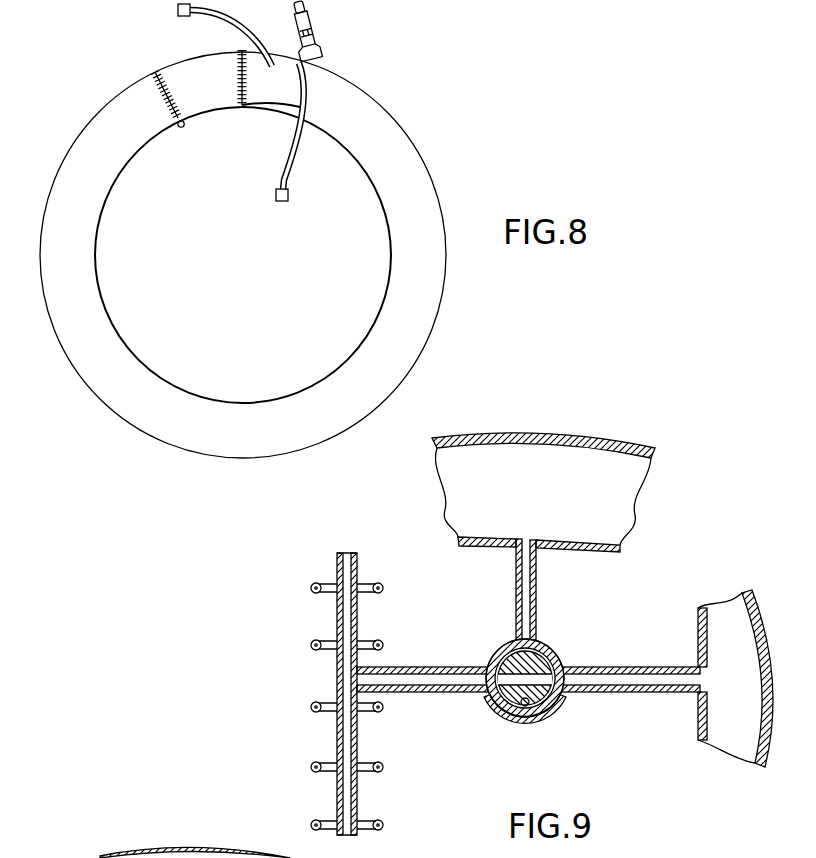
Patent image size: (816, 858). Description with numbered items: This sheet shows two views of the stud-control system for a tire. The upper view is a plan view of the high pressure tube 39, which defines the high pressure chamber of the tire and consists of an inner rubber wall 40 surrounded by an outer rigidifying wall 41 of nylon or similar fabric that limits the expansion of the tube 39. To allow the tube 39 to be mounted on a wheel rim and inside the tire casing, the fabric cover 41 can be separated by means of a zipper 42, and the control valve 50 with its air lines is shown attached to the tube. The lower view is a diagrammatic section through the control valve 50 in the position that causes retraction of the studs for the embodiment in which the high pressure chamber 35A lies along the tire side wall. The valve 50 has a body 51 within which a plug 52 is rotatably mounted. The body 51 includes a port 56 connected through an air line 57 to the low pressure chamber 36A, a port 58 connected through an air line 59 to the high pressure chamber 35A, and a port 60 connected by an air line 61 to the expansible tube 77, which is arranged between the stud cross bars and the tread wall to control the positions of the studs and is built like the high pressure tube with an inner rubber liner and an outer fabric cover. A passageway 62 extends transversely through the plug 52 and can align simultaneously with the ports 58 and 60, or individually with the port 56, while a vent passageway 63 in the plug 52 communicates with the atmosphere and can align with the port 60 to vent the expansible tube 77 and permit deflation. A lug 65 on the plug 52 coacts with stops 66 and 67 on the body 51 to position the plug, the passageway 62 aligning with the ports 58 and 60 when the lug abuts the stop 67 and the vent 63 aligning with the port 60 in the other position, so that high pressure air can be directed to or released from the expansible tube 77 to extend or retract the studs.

In FIG. 8, the high pressure tube 39 is at (98, 362).
In FIG. 8, the inner rubber wall 40 is at (207, 90).
In FIG. 8, the outer rigidifying wall 41 is at (123, 104).
In FIG. 8, the zipper 42 is at (157, 73).
In FIG. 8, the control valve 50 is at (322, 44).
In FIG. 9, the control valve 50 is at (545, 673).
In FIG. 9, the low pressure chamber 36A is at (560, 502).
In FIG. 9, the high pressure chamber 35A is at (754, 692).
In FIG. 9, the air line 57 is at (535, 573).
In FIG. 9, the expansible tube 77 is at (338, 739).
In FIG. 9, the air line 61 is at (414, 693).
In FIG. 9, the air line 59 is at (670, 694).
In FIG. 9, the port 56 is at (541, 650).
In FIG. 9, the plug 52 is at (560, 663).
In FIG. 9, the port 58 is at (600, 668).
In FIG. 9, the passageway 62 is at (505, 650).
In FIG. 9, the body 51 is at (490, 662).
In FIG. 9, the port 60 is at (482, 702).
In FIG. 9, the lug 65 is at (507, 712).
In FIG. 9, the vent passageway 63 is at (523, 708).
In FIG. 9, the stop 66 is at (535, 712).
In FIG. 9, the stop 67 is at (547, 712).